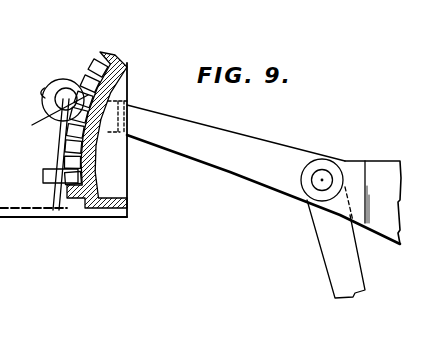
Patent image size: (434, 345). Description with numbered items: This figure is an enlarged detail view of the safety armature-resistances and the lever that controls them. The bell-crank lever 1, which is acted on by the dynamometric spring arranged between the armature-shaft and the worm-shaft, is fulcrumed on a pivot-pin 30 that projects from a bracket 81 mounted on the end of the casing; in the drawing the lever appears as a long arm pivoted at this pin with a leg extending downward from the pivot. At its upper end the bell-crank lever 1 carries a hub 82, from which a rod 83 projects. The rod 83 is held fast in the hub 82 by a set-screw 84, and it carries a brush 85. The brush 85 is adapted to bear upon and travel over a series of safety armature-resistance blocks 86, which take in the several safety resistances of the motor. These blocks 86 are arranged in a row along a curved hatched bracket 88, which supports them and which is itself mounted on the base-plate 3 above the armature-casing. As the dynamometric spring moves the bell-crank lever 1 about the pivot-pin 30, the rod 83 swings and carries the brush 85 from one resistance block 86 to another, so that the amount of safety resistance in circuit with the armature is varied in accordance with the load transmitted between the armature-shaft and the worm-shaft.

The bell-crank lever 1 is at (263, 201).
The base-plate 3 is at (73, 217).
The pivot-pin 30 is at (325, 174).
The bracket 81 is at (377, 165).
The hub 82 is at (72, 118).
The rod 83 is at (44, 113).
The set-screw 84 is at (43, 92).
The brush 85 is at (51, 154).
The safety armature-resistance blocks 86 is at (40, 198).
The bracket 88 is at (145, 133).